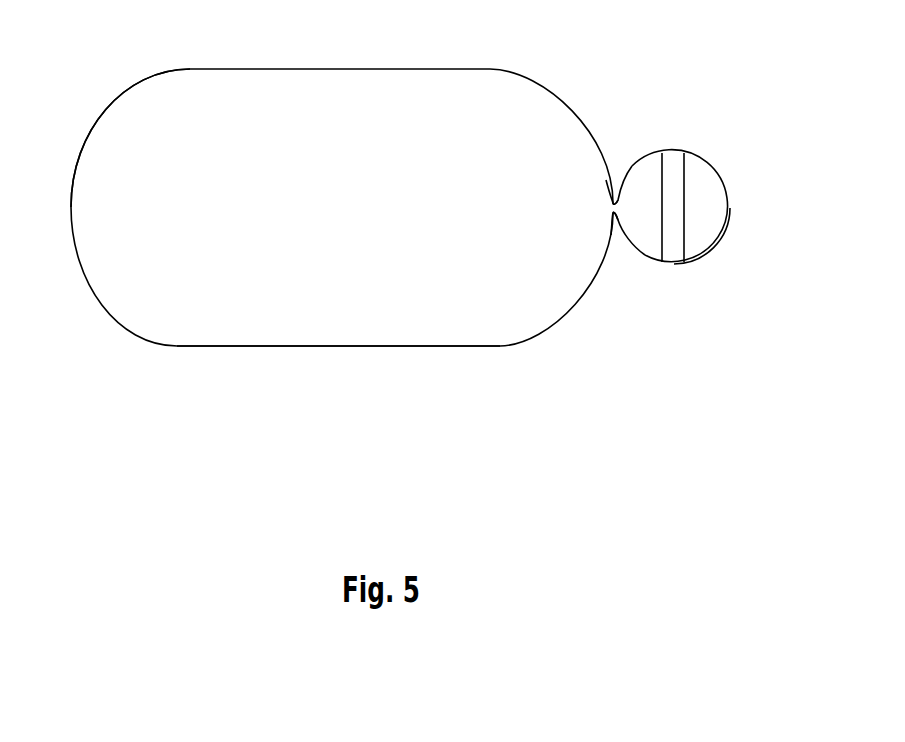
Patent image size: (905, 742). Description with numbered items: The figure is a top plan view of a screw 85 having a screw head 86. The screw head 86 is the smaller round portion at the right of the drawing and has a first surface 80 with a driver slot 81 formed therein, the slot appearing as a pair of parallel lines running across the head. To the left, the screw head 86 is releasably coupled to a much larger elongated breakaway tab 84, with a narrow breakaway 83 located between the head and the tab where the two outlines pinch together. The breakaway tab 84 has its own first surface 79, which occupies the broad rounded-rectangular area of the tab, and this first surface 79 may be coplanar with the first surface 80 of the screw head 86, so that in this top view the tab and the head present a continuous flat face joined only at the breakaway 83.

The first surface 79 is at (367, 231).
The first surface 80 is at (708, 200).
The driver slot 81 is at (670, 170).
The breakaway 83 is at (615, 218).
The breakaway tab 84 is at (488, 298).
The screw 85 is at (113, 70).
The screw head 86 is at (750, 283).